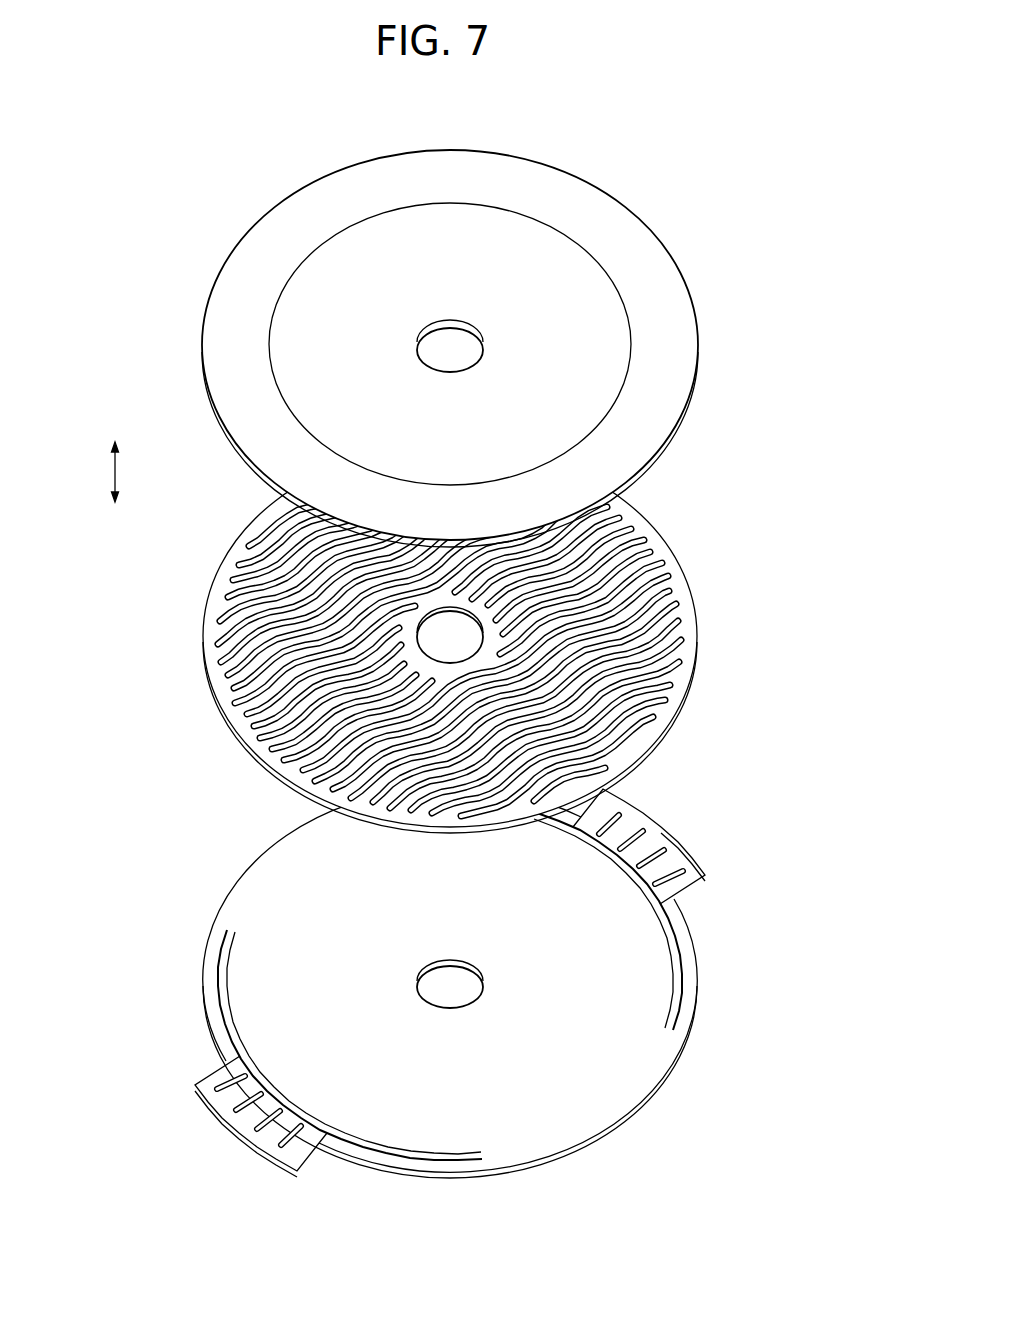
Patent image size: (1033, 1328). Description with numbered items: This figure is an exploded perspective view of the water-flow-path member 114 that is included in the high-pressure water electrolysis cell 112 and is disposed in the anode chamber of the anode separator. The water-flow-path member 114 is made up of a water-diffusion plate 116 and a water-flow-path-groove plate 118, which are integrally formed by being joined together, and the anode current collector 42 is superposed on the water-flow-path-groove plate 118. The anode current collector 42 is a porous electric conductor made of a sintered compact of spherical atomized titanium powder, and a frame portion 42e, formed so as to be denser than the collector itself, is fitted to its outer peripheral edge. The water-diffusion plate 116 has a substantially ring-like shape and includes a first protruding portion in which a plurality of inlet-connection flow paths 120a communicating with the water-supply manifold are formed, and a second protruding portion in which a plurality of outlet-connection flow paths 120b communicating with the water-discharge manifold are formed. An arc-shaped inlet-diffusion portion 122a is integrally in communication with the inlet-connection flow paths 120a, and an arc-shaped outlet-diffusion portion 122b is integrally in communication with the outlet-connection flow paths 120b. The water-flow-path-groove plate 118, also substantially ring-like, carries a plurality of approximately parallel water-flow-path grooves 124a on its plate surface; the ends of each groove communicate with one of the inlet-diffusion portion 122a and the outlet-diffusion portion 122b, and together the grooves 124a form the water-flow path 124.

The high-pressure water electrolysis cell 112 is at (456, 98).
The anode current collector 42 is at (494, 348).
The frame portion 42e is at (678, 338).
The water-flow-path member 114 is at (141, 745).
The water-diffusion plate 116 is at (448, 1004).
The water-flow-path-groove plate 118 is at (405, 639).
The water-flow path 124 is at (250, 667).
The water-flow-path grooves 124a is at (367, 633).
The inlet-connection flow paths 120a is at (295, 1137).
The outlet-connection flow paths 120b is at (675, 880).
The inlet-diffusion portion 122a is at (382, 1148).
The outlet-diffusion portion 122b is at (678, 993).